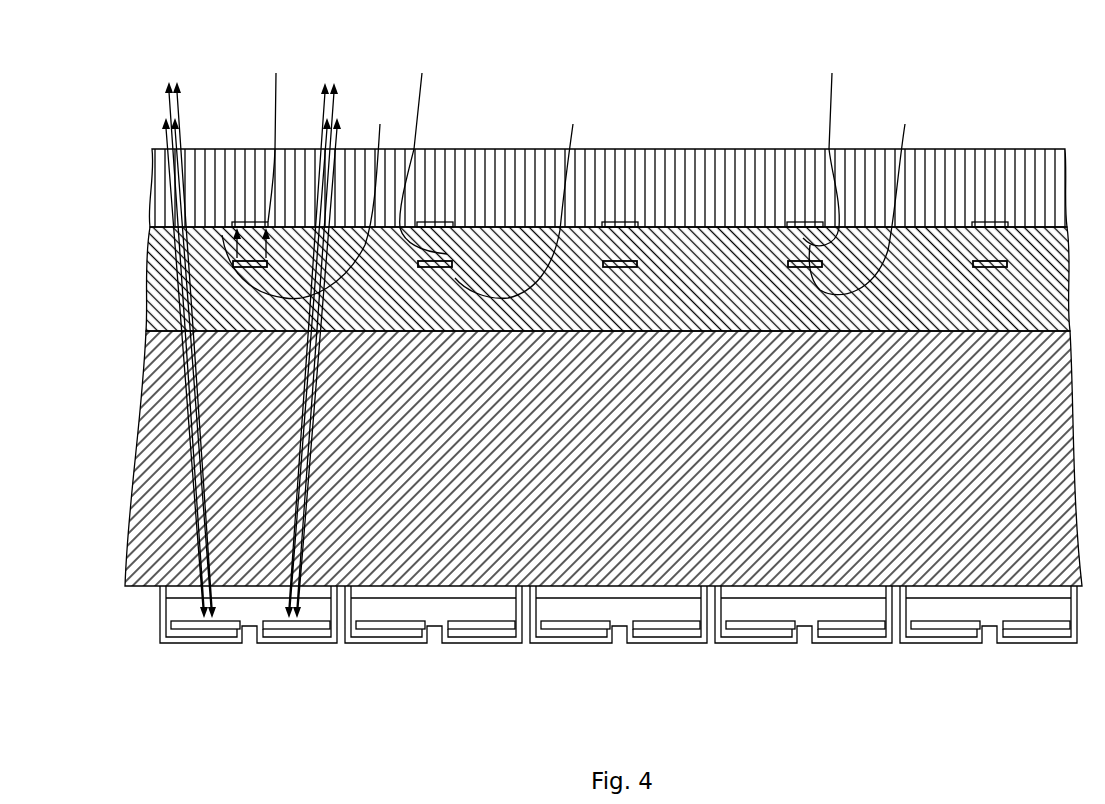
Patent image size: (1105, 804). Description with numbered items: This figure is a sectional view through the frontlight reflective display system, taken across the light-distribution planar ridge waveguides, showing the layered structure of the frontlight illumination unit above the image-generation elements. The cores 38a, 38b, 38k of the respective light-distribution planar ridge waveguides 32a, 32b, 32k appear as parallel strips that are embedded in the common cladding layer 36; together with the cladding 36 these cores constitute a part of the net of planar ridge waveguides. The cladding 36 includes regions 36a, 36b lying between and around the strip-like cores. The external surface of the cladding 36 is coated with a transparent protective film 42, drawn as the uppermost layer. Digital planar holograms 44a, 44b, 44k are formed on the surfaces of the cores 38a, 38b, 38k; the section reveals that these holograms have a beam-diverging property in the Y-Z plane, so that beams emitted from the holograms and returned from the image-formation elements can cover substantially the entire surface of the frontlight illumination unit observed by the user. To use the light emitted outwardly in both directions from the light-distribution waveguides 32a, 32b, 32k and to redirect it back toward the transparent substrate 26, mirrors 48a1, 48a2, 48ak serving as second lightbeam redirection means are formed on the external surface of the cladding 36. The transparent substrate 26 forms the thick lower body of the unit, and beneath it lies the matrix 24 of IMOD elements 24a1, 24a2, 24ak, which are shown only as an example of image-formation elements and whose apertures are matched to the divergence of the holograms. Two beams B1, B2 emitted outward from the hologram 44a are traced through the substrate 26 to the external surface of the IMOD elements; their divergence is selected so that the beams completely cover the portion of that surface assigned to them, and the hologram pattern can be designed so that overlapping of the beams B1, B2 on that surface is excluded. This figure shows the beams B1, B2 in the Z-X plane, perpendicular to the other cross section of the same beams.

The matrix of IMOD elements 24 is at (618, 658).
The IMOD element 24a1 is at (289, 646).
The IMOD element 24a2 is at (497, 648).
The IMOD element 24ak is at (859, 648).
The transparent substrate 26 is at (167, 453).
The light-distribution planar ridge waveguide 32a is at (226, 266).
The light-distribution planar ridge waveguide 32b is at (443, 252).
The light-distribution planar ridge waveguide 32k is at (762, 262).
The cladding layer 36 is at (946, 218).
The intermediate layer region 36a is at (1018, 295).
The intermediate layer region 36b is at (647, 246).
The core 38a is at (311, 200).
The core 38b is at (530, 199).
The core 38k is at (867, 198).
The transparent protective film 42 is at (1047, 168).
The digital planar hologram 44a is at (232, 261).
The digital planar hologram 44b is at (463, 250).
The digital planar hologram 44k is at (814, 248).
The mirror 48a1 is at (276, 135).
The mirror 48a2 is at (422, 151).
The mirror 48ak is at (831, 147).
The beam B1 is at (246, 240).
The beam B2 is at (247, 488).